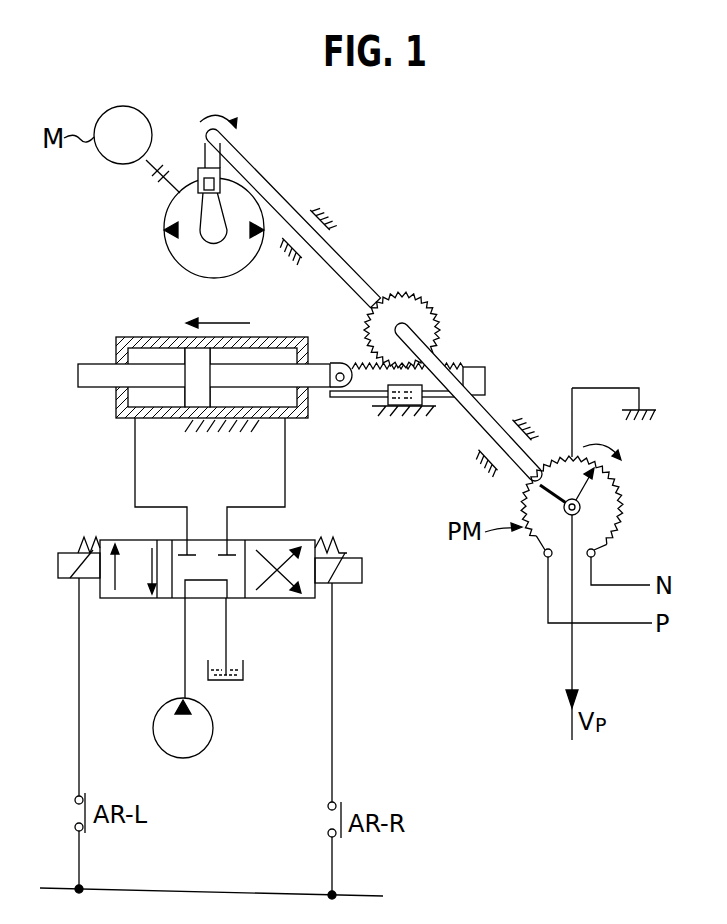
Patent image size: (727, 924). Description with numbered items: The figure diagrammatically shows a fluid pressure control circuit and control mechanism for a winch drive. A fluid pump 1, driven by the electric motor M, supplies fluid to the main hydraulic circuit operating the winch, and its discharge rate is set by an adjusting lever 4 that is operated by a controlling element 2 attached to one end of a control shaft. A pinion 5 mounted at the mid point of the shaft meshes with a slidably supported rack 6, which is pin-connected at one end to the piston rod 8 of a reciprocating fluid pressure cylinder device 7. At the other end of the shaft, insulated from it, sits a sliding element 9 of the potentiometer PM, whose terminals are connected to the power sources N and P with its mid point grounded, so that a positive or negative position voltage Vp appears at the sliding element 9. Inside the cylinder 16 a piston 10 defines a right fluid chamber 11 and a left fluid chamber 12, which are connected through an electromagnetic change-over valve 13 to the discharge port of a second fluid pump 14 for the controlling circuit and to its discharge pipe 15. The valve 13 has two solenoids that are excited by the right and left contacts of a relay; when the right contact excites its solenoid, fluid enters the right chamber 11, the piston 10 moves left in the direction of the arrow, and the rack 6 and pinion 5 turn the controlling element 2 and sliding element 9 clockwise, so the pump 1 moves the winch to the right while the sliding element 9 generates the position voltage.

The fluid pump 1 is at (172, 264).
The controlling element 2 is at (206, 168).
The adjusting lever 4 is at (212, 212).
The pinion 5 is at (425, 305).
The rack 6 is at (486, 377).
The fluid pressure cylinder device 7 is at (110, 391).
The piston rod 8 is at (78, 372).
The sliding element 9 is at (586, 484).
The piston 10 is at (197, 398).
The right fluid chamber 11 is at (283, 355).
The left fluid chamber 12 is at (163, 352).
The electromagnetic change-over valve 13 is at (292, 535).
The fluid pump 14 is at (213, 728).
The discharge pipe 15 is at (226, 631).
The cylinder 16 is at (115, 420).